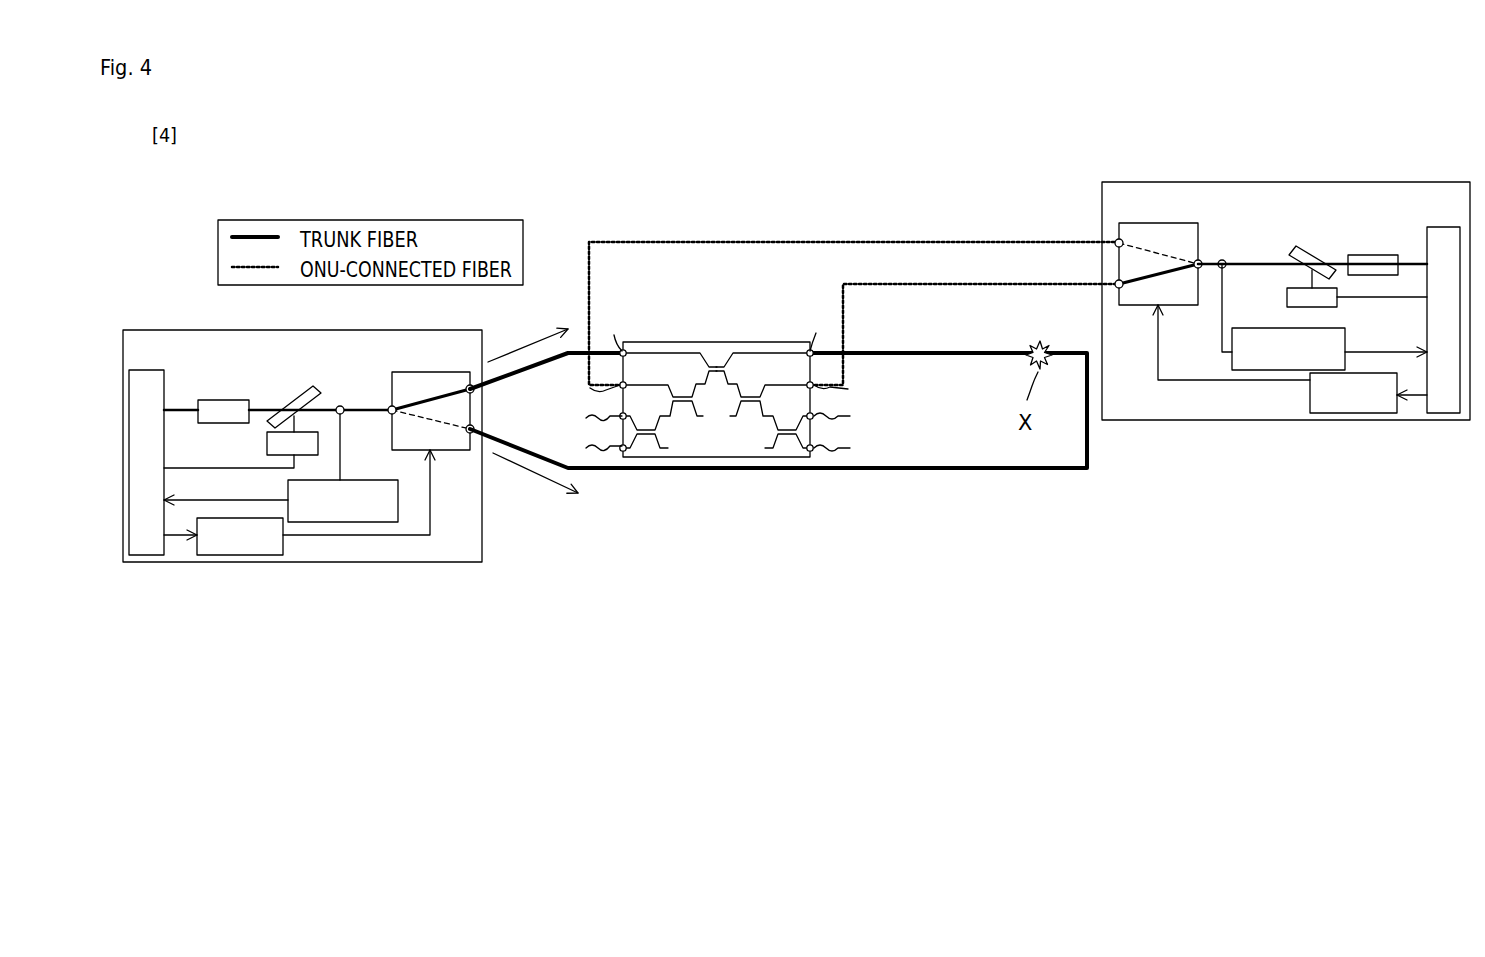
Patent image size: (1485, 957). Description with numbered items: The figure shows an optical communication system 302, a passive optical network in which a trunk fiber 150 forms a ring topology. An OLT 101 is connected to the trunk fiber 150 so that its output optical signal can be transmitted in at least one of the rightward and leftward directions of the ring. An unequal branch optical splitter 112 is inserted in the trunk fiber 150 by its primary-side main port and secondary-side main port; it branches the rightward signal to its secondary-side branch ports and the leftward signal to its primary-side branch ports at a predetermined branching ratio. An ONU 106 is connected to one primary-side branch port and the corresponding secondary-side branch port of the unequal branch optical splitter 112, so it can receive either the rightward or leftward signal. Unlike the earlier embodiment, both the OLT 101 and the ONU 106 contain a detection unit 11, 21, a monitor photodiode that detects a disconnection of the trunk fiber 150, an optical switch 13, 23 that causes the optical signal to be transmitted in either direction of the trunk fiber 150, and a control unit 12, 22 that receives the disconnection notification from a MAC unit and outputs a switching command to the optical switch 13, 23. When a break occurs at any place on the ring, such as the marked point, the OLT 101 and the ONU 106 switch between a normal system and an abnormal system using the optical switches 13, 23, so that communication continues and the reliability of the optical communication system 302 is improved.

The OLT 101 is at (302, 430).
The detection unit 11 is at (398, 486).
The control unit 12 is at (286, 550).
The optical switch 13 is at (461, 453).
The unequal branch optical splitter 112 is at (680, 342).
The trunk fiber 150 is at (1088, 438).
The optical communication system 302 is at (903, 217).
The ONU 106 is at (1286, 284).
The detection unit 21 is at (1347, 338).
The control unit 22 is at (1310, 401).
The optical switch 23 is at (1131, 305).